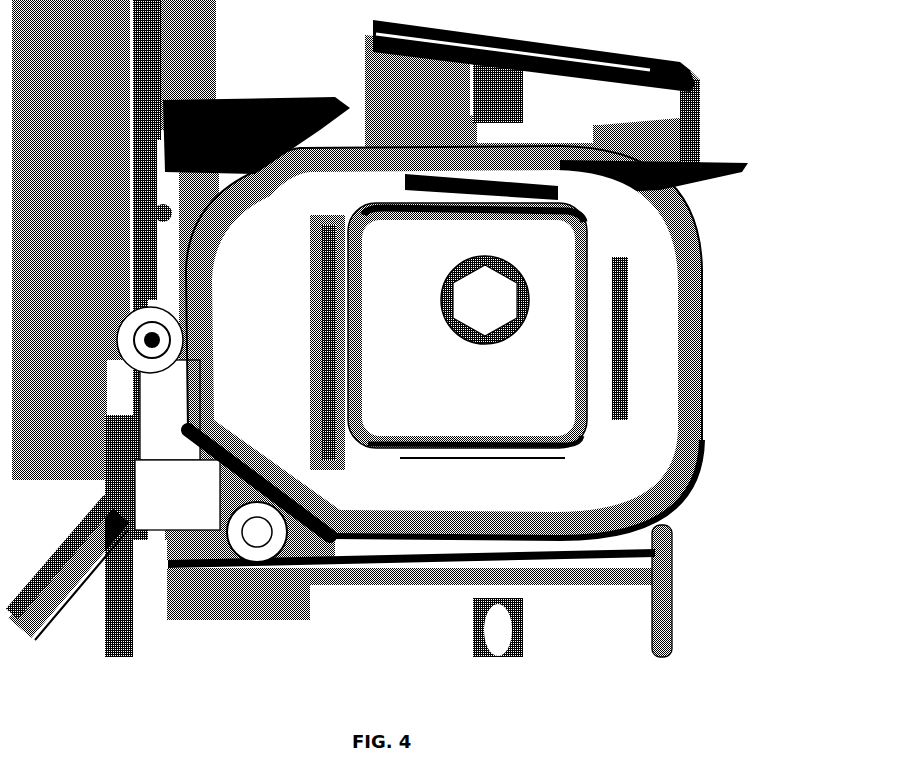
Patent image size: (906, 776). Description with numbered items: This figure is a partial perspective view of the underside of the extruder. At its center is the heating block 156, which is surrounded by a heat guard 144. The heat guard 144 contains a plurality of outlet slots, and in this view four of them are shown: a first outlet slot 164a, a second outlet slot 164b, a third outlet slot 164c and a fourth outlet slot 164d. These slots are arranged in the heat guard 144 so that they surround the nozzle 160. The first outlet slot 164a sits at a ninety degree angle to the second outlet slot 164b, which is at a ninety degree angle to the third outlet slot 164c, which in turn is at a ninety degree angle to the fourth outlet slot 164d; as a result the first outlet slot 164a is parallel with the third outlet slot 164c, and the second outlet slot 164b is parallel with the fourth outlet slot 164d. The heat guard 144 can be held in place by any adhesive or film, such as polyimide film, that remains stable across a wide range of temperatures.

The heat guard 144 is at (270, 293).
The heating block 156 is at (387, 238).
The nozzle 160 is at (483, 322).
The first outlet slot 164a is at (327, 372).
The second outlet slot 164b is at (437, 180).
The third outlet slot 164c is at (620, 347).
The fourth outlet slot 164d is at (460, 478).